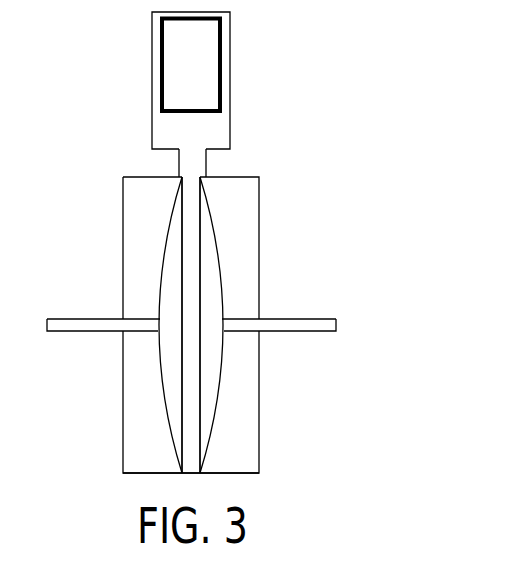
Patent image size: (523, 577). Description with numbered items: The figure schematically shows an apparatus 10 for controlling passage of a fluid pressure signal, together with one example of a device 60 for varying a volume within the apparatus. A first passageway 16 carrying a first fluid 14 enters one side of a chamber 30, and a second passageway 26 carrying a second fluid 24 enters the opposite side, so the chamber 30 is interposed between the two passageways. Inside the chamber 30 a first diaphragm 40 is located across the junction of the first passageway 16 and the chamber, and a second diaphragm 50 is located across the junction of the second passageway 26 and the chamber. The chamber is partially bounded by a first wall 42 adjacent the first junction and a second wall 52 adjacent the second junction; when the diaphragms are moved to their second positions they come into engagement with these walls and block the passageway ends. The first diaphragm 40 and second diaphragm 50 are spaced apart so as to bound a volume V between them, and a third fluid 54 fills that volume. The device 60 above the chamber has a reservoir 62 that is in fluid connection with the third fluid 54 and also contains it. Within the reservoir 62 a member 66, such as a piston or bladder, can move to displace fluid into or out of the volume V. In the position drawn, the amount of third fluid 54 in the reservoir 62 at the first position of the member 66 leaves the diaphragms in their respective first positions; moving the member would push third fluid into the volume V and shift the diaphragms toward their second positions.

The apparatus 10 is at (64, 90).
The device for varying the volume 60 is at (231, 46).
The member 66 is at (222, 80).
The reservoir 62 is at (218, 133).
The volume V is at (186, 189).
The chamber 30 is at (197, 259).
The first diaphragm 40 is at (180, 232).
The first wall 42 is at (168, 250).
The second wall 52 is at (212, 262).
The second diaphragm 50 is at (201, 373).
The third fluid 54 is at (190, 421).
The first passageway 16 is at (83, 318).
The first fluid 14 is at (70, 332).
The second passageway 26 is at (313, 318).
The second fluid 24 is at (300, 332).